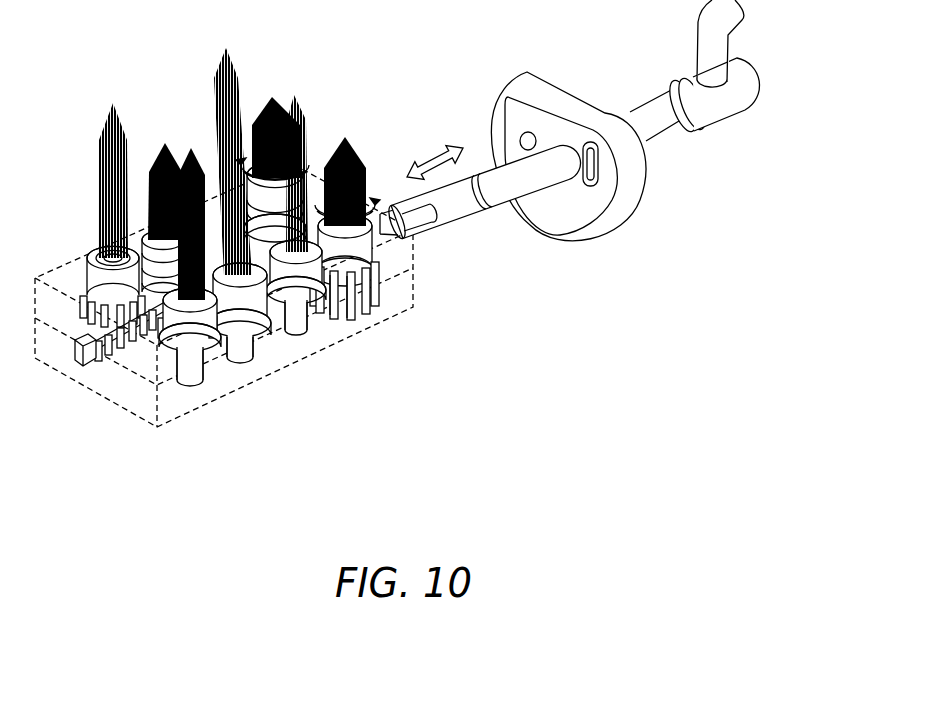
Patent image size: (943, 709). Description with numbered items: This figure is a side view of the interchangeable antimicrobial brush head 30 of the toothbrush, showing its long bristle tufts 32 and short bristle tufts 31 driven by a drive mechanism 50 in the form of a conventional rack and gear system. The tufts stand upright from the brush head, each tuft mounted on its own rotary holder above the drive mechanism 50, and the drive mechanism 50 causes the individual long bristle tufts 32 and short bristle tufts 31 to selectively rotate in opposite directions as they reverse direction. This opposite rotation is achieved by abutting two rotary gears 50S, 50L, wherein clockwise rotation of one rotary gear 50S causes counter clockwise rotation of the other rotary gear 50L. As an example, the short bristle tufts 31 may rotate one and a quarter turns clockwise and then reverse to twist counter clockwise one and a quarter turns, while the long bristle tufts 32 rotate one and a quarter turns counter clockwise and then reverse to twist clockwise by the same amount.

The antimicrobial brush head 30 is at (133, 62).
The short bristle tufts 31 is at (163, 155).
The long bristle tufts 32 is at (108, 140).
The drive mechanism 50 is at (95, 365).
The rotary gear 50S is at (208, 353).
The rotary gear 50L is at (253, 337).